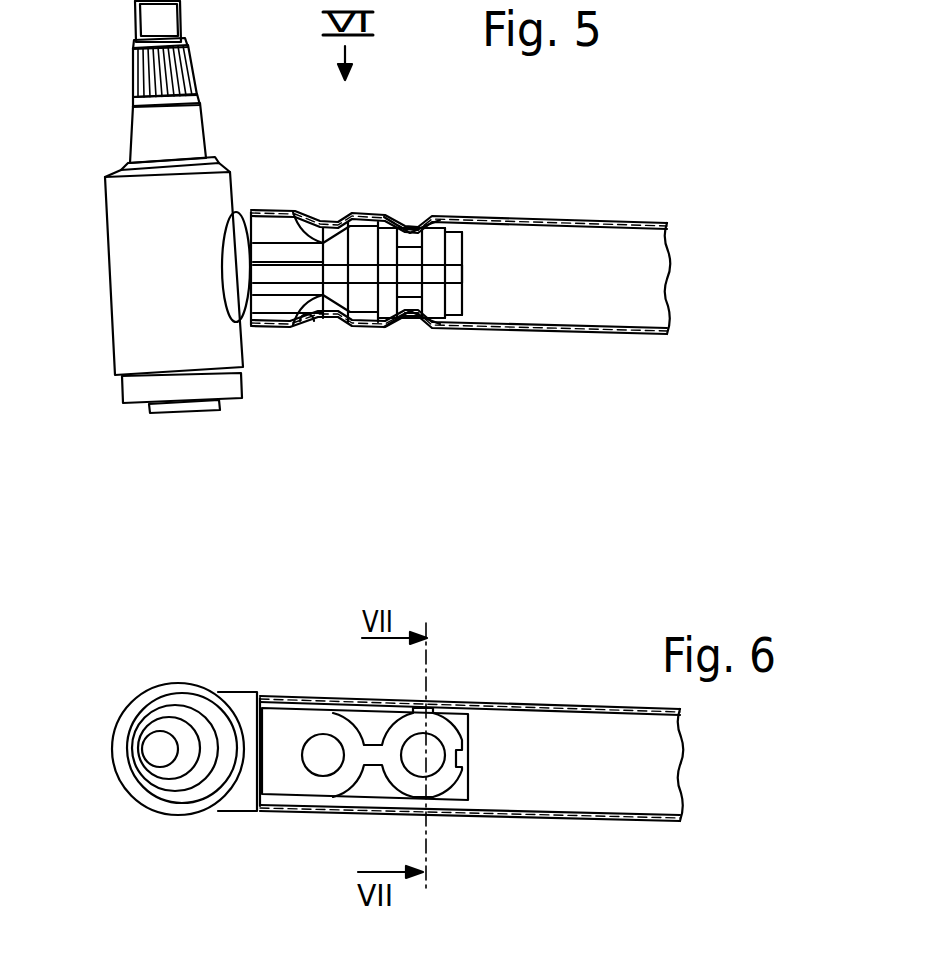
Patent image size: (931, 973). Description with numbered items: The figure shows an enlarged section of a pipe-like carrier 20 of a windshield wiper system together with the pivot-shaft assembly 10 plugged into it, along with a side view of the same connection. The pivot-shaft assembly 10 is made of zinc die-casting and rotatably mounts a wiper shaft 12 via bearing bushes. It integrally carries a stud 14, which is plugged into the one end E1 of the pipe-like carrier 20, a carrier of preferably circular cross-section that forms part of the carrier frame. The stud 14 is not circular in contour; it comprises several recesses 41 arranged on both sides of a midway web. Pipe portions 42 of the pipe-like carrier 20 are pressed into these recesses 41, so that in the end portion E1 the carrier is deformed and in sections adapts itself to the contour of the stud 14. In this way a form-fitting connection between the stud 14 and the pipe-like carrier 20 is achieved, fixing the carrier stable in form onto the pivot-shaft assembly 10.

In FIG. 5, the pivot-shaft assembly 10 is at (222, 130).
In FIG. 6, the pivot-shaft assembly 10 is at (185, 670).
In FIG. 5, the wiper shaft 12 is at (147, 22).
In FIG. 6, the wiper shaft 12 is at (138, 752).
In FIG. 5, the stud 14 is at (270, 302).
In FIG. 6, the stud 14 is at (283, 781).
In FIG. 5, the pipe-like carrier 20 is at (565, 240).
In FIG. 6, the pipe-like carrier 20 is at (600, 727).
In FIG. 5, the recesses 41 is at (295, 214).
In FIG. 6, the recesses 41 is at (317, 748).
In FIG. 5, the pipe portions 42 is at (323, 215).
In FIG. 5, the one end of the pipe-like carrier E1 is at (540, 345).